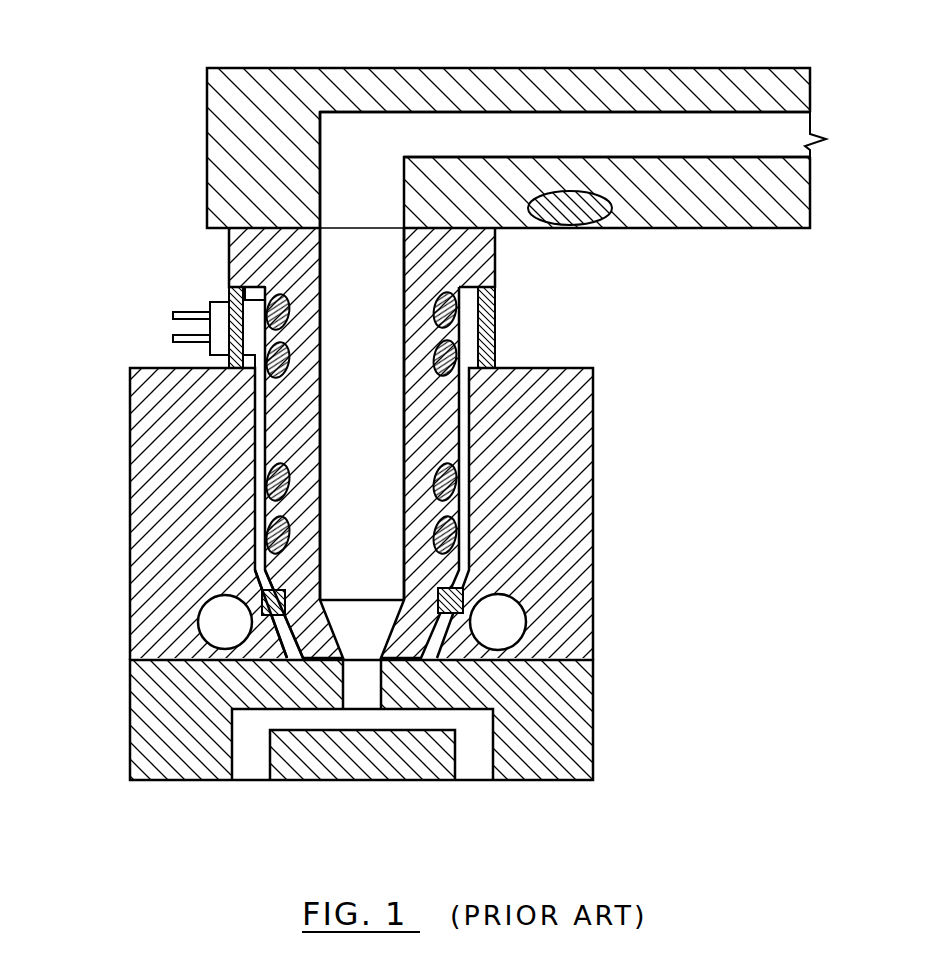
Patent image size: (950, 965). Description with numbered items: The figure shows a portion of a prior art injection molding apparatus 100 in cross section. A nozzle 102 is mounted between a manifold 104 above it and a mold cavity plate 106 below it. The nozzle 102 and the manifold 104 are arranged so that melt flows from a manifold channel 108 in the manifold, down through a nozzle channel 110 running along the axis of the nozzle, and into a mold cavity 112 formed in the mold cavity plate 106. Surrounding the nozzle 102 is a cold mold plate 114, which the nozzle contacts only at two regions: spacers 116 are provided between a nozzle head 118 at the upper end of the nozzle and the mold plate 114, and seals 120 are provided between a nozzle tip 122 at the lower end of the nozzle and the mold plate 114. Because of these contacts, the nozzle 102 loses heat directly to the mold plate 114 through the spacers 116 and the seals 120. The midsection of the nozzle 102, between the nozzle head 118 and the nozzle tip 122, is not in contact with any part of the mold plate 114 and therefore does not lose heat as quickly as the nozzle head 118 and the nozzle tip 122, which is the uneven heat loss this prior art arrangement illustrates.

The injection molding apparatus 100 is at (728, 677).
The nozzle 102 is at (428, 424).
The manifold 104 is at (233, 113).
The mold cavity plate 106 is at (130, 712).
The manifold channel 108 is at (420, 126).
The nozzle channel 110 is at (372, 468).
The mold cavity 112 is at (478, 747).
The mold plate 114 is at (557, 565).
The spacers 116 is at (487, 320).
The nozzle head 118 is at (470, 257).
The seals 120 is at (268, 598).
The nozzle tip 122 is at (303, 643).